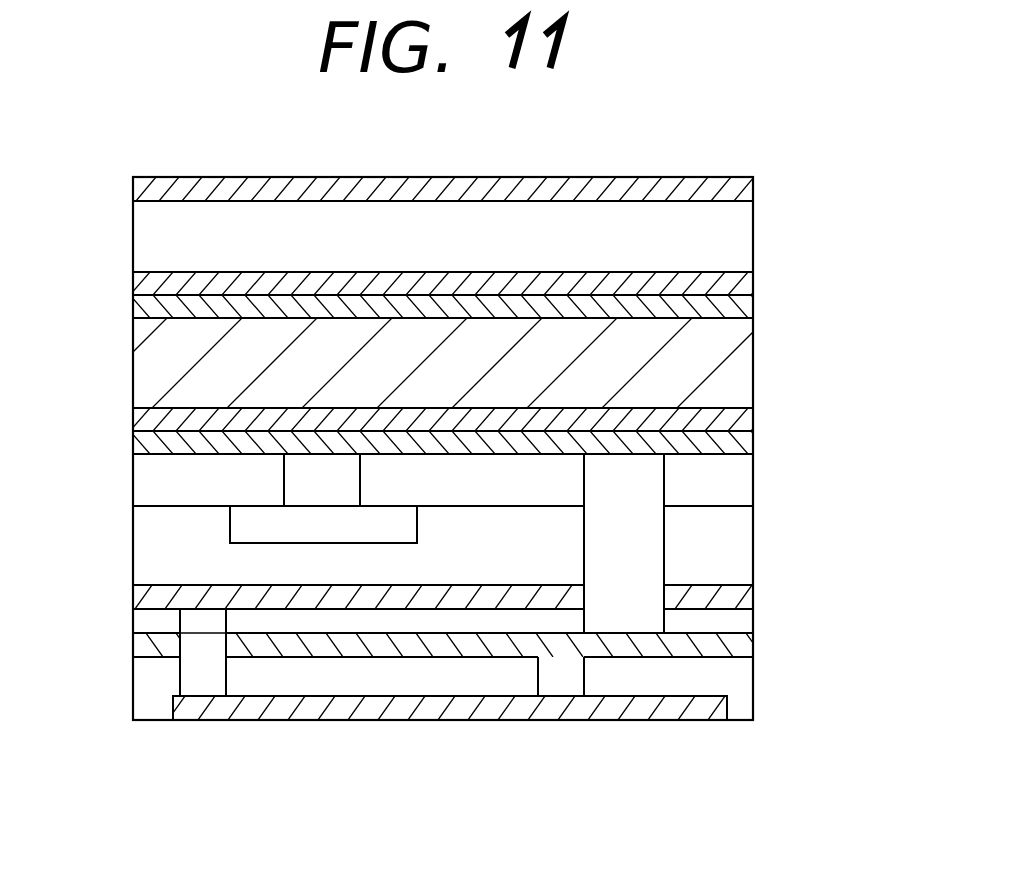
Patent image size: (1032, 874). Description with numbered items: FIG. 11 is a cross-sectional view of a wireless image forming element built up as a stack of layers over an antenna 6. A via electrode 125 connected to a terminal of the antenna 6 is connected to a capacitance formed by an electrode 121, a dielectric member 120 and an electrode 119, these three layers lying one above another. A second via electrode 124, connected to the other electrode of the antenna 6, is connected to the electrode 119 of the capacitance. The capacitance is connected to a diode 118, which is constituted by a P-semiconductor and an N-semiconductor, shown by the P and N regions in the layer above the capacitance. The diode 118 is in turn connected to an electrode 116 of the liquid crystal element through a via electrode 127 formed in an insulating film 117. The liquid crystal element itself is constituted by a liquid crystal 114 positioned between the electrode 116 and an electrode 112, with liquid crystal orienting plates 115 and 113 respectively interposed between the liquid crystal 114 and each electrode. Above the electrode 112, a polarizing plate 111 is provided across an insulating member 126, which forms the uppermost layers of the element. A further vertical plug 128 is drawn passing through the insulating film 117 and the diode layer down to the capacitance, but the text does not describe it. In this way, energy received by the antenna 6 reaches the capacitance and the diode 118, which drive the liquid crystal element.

The polarizing plate 111 is at (740, 182).
The insulating member 126 is at (733, 230).
The electrode 112 is at (736, 280).
The liquid crystal orienting plate 113 is at (740, 305).
The liquid crystal 114 is at (733, 368).
The liquid crystal orienting plate 115 is at (733, 416).
The electrode 116 is at (740, 440).
The insulating film 117 is at (733, 480).
The diode 118 is at (733, 549).
The electrode 119 is at (733, 592).
The dielectric member 120 is at (745, 622).
The electrode 121 is at (742, 645).
The via electrode 124 is at (212, 685).
The via electrode 125 is at (553, 712).
The via electrode 127 is at (305, 482).
The contact plug 128 is at (631, 602).
The antenna 6 is at (728, 701).